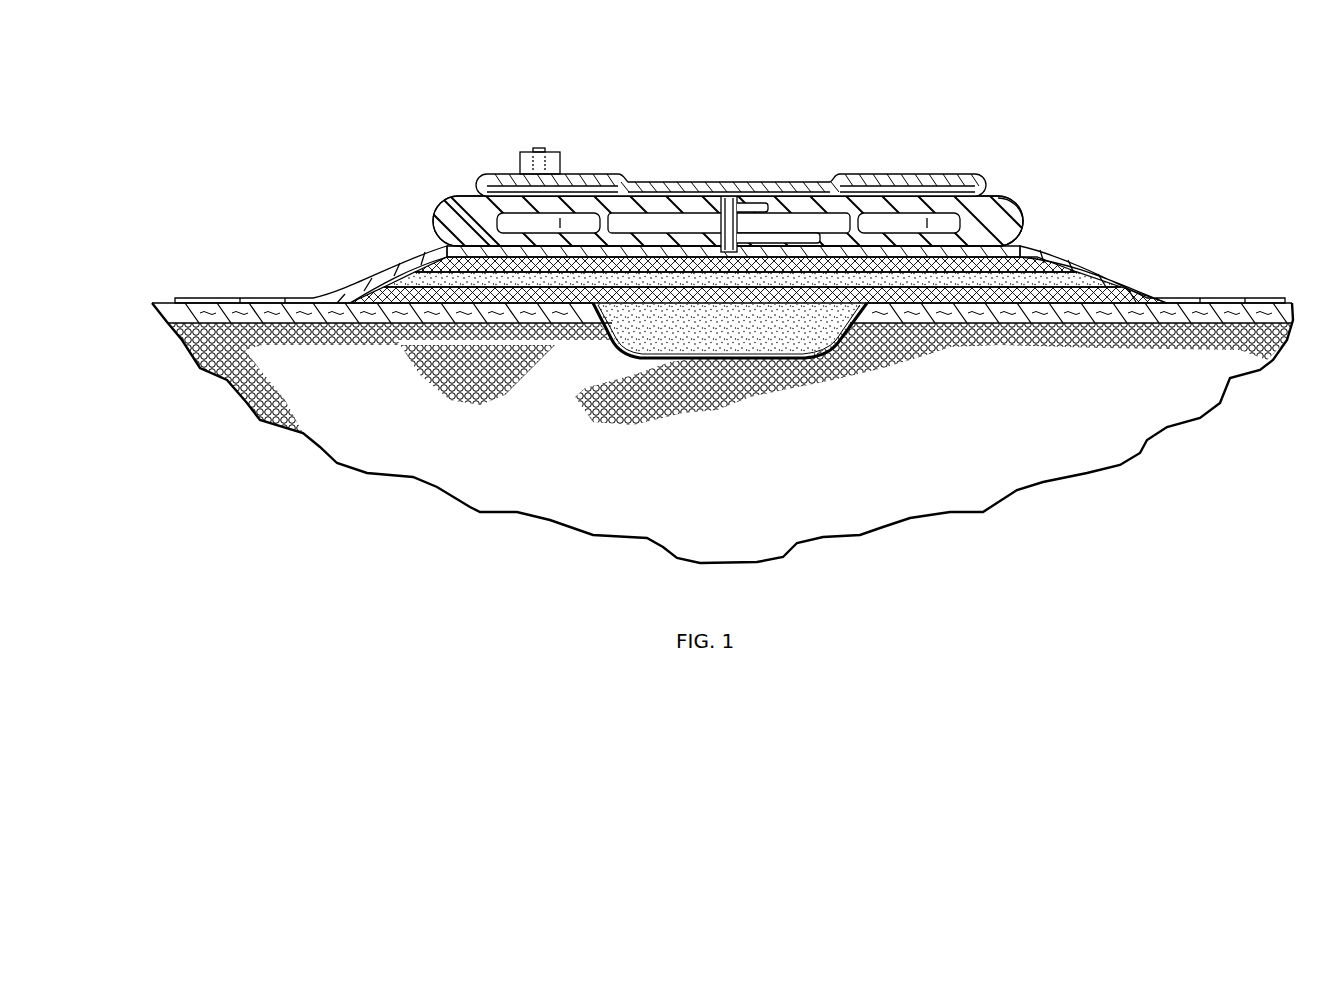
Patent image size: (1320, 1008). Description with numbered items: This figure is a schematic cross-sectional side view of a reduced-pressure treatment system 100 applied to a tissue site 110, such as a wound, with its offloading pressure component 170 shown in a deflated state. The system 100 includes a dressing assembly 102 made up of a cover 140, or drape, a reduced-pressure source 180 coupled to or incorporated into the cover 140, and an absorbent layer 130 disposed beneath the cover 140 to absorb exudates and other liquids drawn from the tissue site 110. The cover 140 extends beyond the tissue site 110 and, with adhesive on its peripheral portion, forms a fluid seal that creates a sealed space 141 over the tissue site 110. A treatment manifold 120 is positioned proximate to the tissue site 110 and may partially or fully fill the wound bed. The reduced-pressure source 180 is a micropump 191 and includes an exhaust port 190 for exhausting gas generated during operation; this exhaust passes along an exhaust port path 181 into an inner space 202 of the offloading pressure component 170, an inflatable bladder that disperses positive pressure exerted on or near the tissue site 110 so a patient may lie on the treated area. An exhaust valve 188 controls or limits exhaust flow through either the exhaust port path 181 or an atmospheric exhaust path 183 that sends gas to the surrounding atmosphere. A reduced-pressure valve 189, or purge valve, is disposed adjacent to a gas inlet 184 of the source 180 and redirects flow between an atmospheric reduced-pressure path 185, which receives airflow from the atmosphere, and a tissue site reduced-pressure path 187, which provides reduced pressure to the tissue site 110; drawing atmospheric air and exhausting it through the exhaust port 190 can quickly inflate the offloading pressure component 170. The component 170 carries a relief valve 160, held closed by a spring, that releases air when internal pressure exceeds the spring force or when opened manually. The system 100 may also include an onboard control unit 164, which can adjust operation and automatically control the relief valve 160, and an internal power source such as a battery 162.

The reduced-pressure treatment system 100 is at (914, 101).
The dressing assembly 102 is at (1128, 284).
The tissue site 110 is at (660, 356).
The treatment manifold 120 is at (816, 337).
The absorbent layer 130 is at (483, 286).
The cover 140 is at (328, 291).
The sealed space 141 is at (375, 270).
The relief valve 160 is at (520, 160).
The battery 162 is at (448, 218).
The onboard control unit 164 is at (907, 227).
The offloading pressure component 170 is at (947, 174).
The reduced-pressure source 180 is at (600, 213).
The exhaust port path 181 is at (726, 200).
The atmospheric exhaust path 183 is at (1003, 200).
The gas inlet 184 is at (732, 253).
The atmospheric reduced-pressure path 185 is at (1023, 226).
The tissue site reduced-pressure path 187 is at (694, 301).
The exhaust valve 188 is at (710, 228).
The reduced-pressure valve 189 is at (770, 218).
The exhaust port 190 is at (755, 210).
The micropump 191 is at (807, 210).
The inner space 202 is at (812, 197).